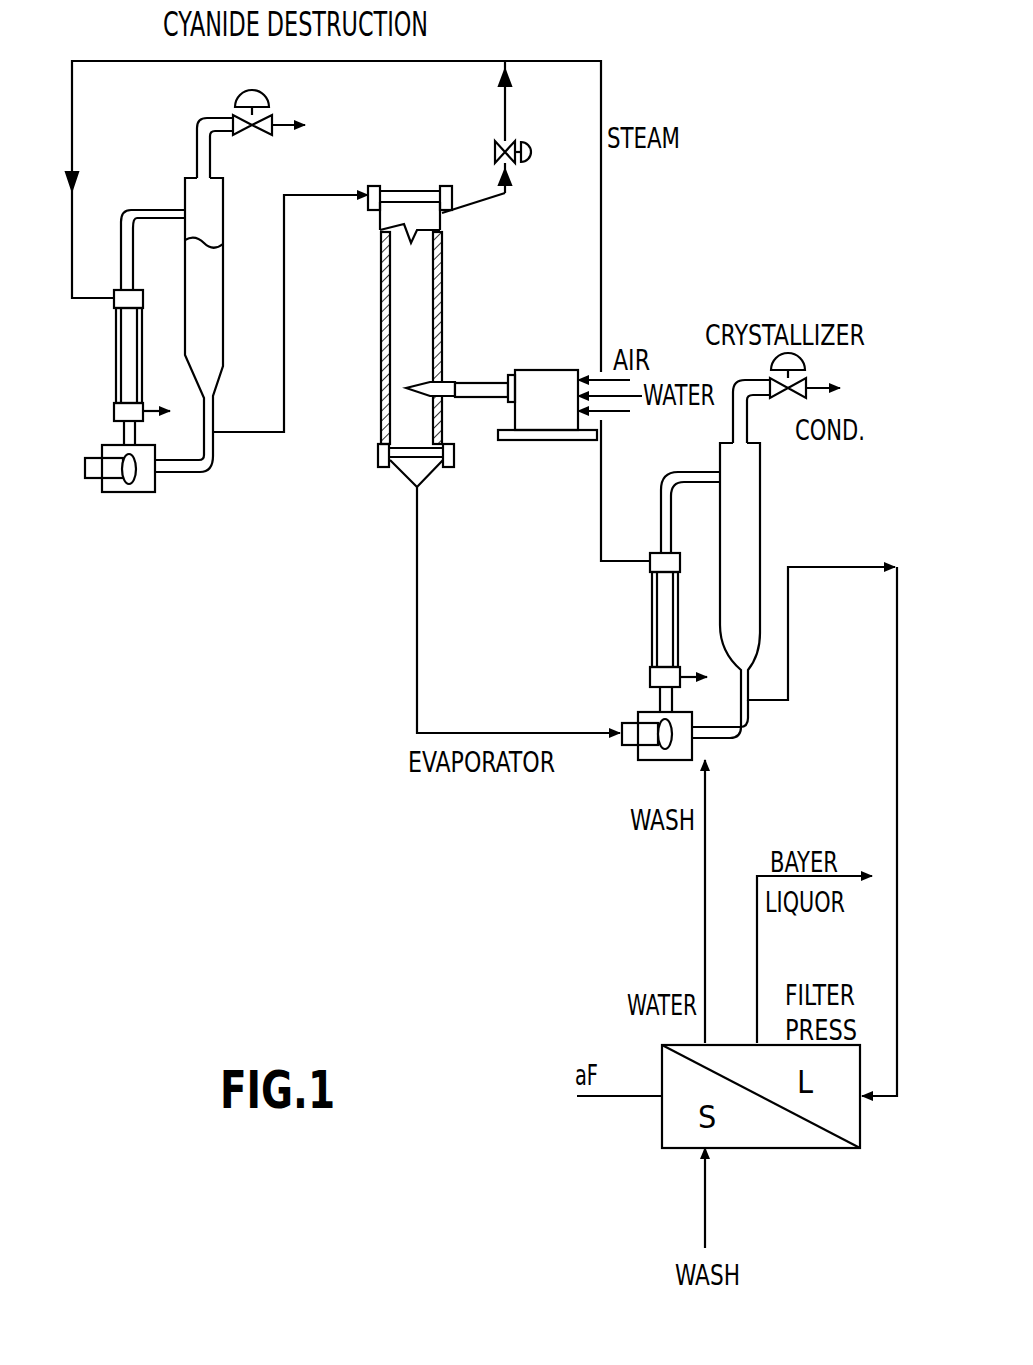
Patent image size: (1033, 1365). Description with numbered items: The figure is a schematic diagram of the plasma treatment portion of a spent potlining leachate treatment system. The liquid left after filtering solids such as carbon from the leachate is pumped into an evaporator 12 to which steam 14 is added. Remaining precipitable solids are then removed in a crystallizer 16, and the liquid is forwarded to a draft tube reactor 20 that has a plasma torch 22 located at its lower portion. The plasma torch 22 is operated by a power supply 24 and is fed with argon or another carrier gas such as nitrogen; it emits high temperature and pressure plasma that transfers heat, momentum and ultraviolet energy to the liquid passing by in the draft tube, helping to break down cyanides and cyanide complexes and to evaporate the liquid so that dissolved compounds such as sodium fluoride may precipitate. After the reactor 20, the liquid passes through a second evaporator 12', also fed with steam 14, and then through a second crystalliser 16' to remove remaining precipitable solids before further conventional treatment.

The evaporator 12 is at (96, 367).
The steam 14 is at (75, 145).
The crystallizer 16 is at (231, 281).
The draft tube reactor 20 is at (428, 288).
The plasma torch 22 is at (476, 376).
The power supply 24 is at (543, 420).
The second evaporator 12' is at (646, 632).
The second crystalliser 16' is at (778, 545).